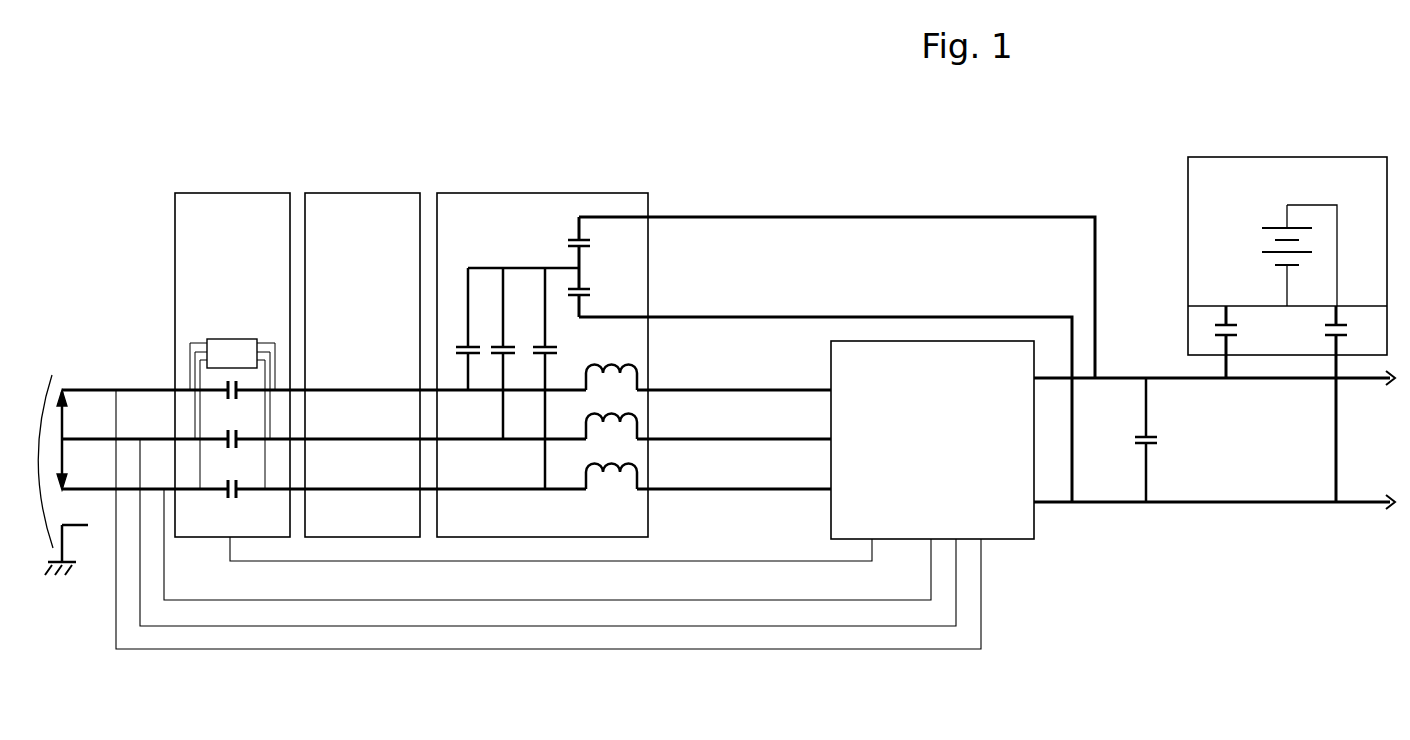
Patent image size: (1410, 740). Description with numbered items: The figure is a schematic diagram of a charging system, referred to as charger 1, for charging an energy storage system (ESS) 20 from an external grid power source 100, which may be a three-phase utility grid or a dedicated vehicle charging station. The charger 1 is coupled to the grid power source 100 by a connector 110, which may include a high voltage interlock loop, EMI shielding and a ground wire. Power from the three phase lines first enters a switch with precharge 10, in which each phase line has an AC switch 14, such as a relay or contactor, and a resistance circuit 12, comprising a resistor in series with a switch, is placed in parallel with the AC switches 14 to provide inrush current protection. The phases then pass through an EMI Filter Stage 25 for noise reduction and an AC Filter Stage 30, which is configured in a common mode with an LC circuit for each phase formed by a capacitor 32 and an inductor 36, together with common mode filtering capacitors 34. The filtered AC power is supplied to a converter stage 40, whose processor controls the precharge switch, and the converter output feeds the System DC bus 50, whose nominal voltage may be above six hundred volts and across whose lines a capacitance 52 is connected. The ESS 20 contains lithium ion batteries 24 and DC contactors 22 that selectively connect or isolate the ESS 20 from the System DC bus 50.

The charger 1 is at (610, 383).
The connector 110 is at (62, 390).
The grid power source 100 is at (40, 483).
The switch with precharge 10 is at (232, 365).
The resistance circuit 12 is at (232, 402).
The AC switch 14 is at (232, 455).
The EMI filter stage 25 is at (362, 365).
The AC filter stage 30 is at (542, 365).
The capacitor 32 is at (516, 378).
The common mode filtering capacitors 34 is at (831, 359).
The inductor 36 is at (611, 436).
The converter stage 40 is at (932, 440).
The system DC bus 50 is at (1214, 440).
The capacitance 52 is at (1134, 440).
The energy storage system 20 is at (1287, 256).
The lithium ion batteries 24 is at (1289, 255).
The DC contactors 22 is at (1281, 404).